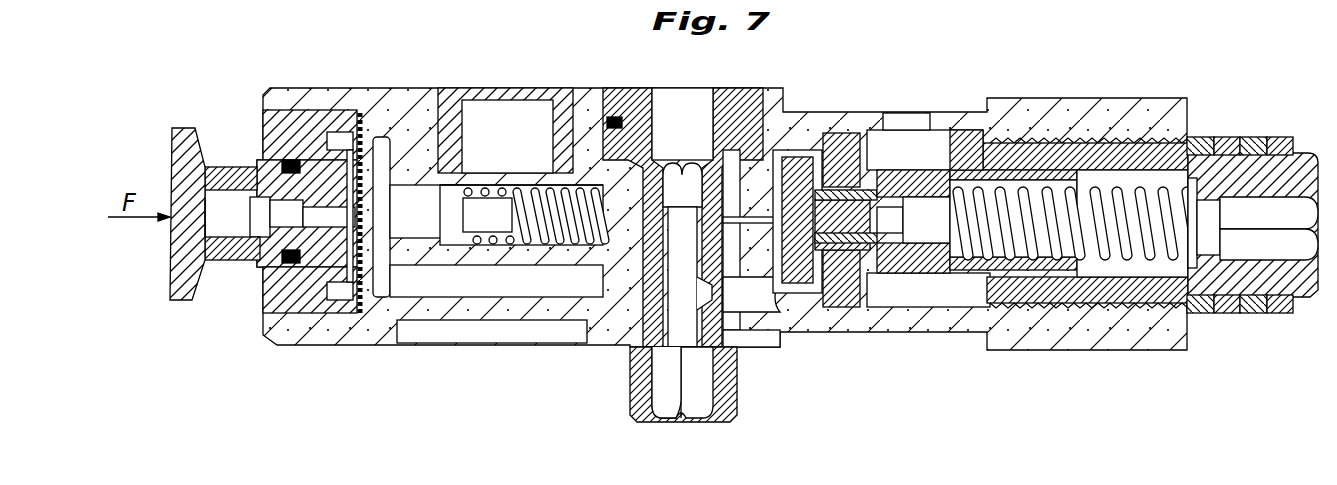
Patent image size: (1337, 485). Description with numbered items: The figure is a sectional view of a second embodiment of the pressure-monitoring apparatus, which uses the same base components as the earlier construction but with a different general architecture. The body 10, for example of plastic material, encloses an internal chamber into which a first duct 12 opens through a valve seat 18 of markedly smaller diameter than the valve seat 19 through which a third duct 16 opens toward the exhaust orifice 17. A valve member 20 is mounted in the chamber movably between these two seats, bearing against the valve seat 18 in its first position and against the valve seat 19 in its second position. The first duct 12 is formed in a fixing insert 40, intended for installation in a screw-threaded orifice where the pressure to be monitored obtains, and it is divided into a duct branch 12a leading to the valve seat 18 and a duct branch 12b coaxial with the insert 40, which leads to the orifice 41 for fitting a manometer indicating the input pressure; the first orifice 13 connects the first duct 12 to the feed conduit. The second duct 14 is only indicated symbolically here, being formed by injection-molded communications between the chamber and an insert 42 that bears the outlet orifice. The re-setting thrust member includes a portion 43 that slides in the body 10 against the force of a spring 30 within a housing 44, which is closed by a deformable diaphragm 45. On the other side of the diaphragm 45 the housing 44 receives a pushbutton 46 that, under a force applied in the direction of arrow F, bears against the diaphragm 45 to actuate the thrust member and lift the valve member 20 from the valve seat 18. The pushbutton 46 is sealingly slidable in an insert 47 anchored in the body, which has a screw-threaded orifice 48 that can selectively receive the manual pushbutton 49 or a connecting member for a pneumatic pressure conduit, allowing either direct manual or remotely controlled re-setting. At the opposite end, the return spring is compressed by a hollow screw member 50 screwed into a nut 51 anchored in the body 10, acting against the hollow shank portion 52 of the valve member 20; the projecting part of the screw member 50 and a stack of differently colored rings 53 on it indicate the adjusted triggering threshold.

The body 10 is at (1142, 112).
The first duct 12 is at (697, 385).
The duct branch 12a is at (770, 350).
The duct branch 12b is at (688, 220).
The first orifice 13 is at (675, 400).
The second duct 14 is at (645, 260).
The third duct 16 is at (880, 160).
The exhaust orifice 17 is at (912, 122).
The valve seat 18 is at (778, 160).
The valve seat 19 is at (848, 276).
The valve member 20 is at (835, 150).
The spring 30 is at (508, 170).
The insert 40 is at (640, 330).
The orifice 41 is at (662, 112).
The insert 42 is at (458, 118).
The portion 43 is at (405, 235).
The housing 44 is at (432, 282).
The deformable diaphragm 45 is at (364, 135).
The pushbutton 46 is at (229, 168).
The insert 47 is at (272, 275).
The screw-threaded orifice 48 is at (215, 268).
The pushbutton 49 is at (172, 150).
The hollow screw member 50 is at (1222, 175).
The nut 51 is at (1065, 142).
The hollow shank portion 52 is at (935, 185).
The rings 53 is at (1226, 313).